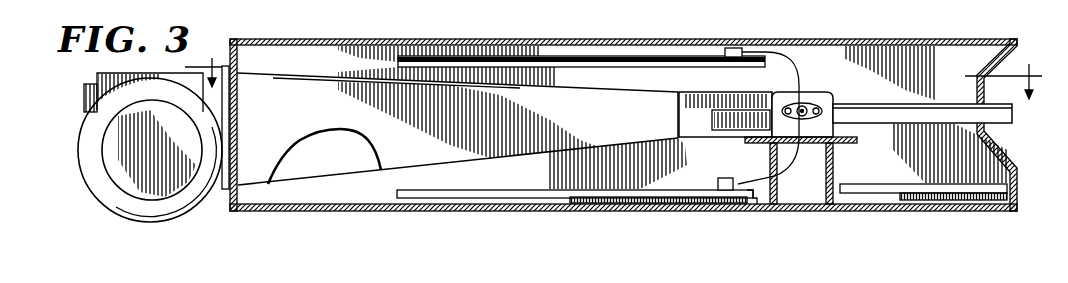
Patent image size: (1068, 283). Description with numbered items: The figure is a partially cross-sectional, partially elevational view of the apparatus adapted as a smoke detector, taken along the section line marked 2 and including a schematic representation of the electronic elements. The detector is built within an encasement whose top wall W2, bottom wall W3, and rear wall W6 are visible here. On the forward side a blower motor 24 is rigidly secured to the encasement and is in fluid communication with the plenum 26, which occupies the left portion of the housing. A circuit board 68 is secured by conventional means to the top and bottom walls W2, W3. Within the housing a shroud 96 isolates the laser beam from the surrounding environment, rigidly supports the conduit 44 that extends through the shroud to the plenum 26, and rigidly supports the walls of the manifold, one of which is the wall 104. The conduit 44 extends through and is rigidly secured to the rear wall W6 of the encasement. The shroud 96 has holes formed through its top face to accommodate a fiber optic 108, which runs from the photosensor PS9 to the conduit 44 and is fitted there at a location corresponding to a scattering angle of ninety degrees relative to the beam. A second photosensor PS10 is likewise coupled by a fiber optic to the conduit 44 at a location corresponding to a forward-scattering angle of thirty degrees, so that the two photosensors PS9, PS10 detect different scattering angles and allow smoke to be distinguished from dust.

The blower motor 24 is at (108, 71).
The section line 2 is at (613, 70).
The top wall W2 is at (384, 44).
The bottom wall W3 is at (350, 212).
The rear wall W6 is at (1018, 40).
The manifold wall 104 is at (298, 121).
The plenum 26 is at (350, 161).
The circuit board 68 is at (541, 174).
The photosensor PS9 is at (744, 40).
The photosensor PS10 is at (728, 164).
The fiber optic 108 is at (797, 48).
The shroud 96 is at (828, 92).
The conduit 44 is at (1010, 121).